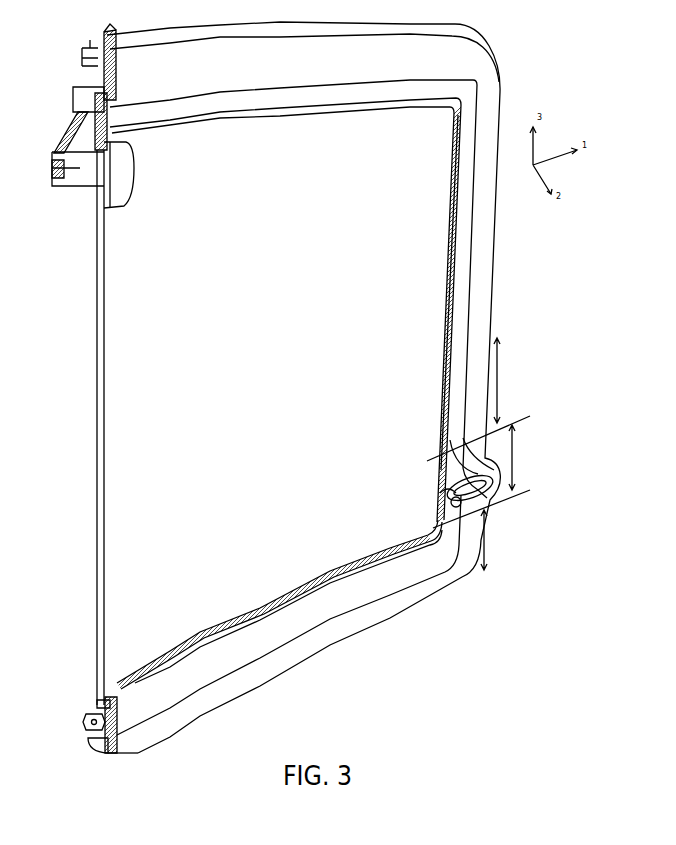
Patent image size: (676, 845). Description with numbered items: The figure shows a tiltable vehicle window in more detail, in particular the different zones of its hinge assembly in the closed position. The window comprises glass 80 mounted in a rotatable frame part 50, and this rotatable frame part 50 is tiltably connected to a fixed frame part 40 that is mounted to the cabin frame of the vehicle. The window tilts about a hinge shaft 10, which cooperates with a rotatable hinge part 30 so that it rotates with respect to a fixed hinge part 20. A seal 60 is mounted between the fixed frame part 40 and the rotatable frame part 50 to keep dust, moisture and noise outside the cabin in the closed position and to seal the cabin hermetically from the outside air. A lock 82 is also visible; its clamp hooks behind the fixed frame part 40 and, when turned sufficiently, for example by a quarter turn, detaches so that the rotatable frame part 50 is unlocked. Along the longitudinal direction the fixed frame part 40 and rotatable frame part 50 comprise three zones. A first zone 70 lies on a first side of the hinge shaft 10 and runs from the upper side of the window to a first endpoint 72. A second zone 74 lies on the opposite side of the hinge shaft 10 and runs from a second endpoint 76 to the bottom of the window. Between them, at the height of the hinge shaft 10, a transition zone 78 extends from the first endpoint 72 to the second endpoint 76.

The hinge shaft 10 is at (451, 501).
The fixed hinge part 20 is at (483, 472).
The rotatable hinge part 30 is at (445, 468).
The fixed frame part 40 is at (96, 33).
The rotatable frame part 50 is at (87, 66).
The seal 60 is at (88, 88).
The first zone 70 is at (498, 365).
The first endpoint 72 is at (518, 418).
The second zone 74 is at (488, 536).
The second endpoint 76 is at (513, 492).
The transition zone 78 is at (514, 456).
The glass 80 is at (424, 280).
The lock 82 is at (117, 210).